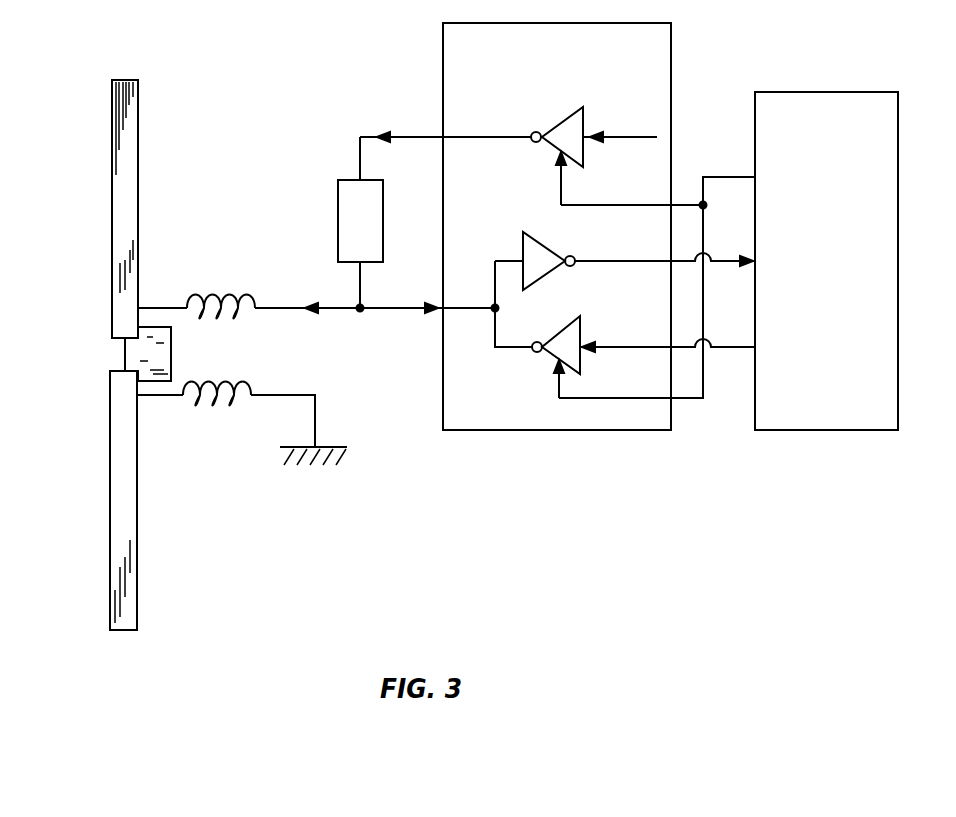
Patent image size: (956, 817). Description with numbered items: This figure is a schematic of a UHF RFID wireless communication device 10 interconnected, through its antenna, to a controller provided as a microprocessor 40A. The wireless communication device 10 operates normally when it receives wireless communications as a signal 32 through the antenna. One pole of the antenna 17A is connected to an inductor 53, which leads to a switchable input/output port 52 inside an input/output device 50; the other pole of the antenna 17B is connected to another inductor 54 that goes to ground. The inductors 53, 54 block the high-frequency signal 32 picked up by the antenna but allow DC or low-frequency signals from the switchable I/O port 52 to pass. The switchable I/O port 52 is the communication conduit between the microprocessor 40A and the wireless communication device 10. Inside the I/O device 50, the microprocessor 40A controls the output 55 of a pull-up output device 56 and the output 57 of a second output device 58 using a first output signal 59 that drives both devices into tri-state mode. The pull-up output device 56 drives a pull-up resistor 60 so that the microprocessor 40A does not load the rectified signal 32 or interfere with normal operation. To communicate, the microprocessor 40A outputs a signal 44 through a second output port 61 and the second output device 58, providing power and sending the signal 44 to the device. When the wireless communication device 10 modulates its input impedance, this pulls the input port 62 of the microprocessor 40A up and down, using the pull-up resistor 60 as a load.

The wireless communication device 10 is at (123, 353).
The signal 32 is at (98, 353).
The one pole of the antenna 17A is at (139, 122).
The other pole of the antenna 17B is at (136, 537).
The inductor 53 is at (203, 296).
The inductor 54 is at (198, 402).
The switchable input/output port 52 is at (413, 312).
The pull-up resistor 60 is at (372, 230).
The input/output device 50 is at (585, 82).
The output of the pull-up output device 55 is at (509, 137).
The pull-up output device 56 is at (583, 127).
The output of the second output device 57 is at (517, 350).
The second output device 58 is at (548, 357).
The output communications signal 44 is at (613, 345).
The microprocessor 40A is at (848, 146).
The first output signal 59 is at (793, 186).
The input port 62 is at (793, 271).
The second output port 61 is at (793, 355).